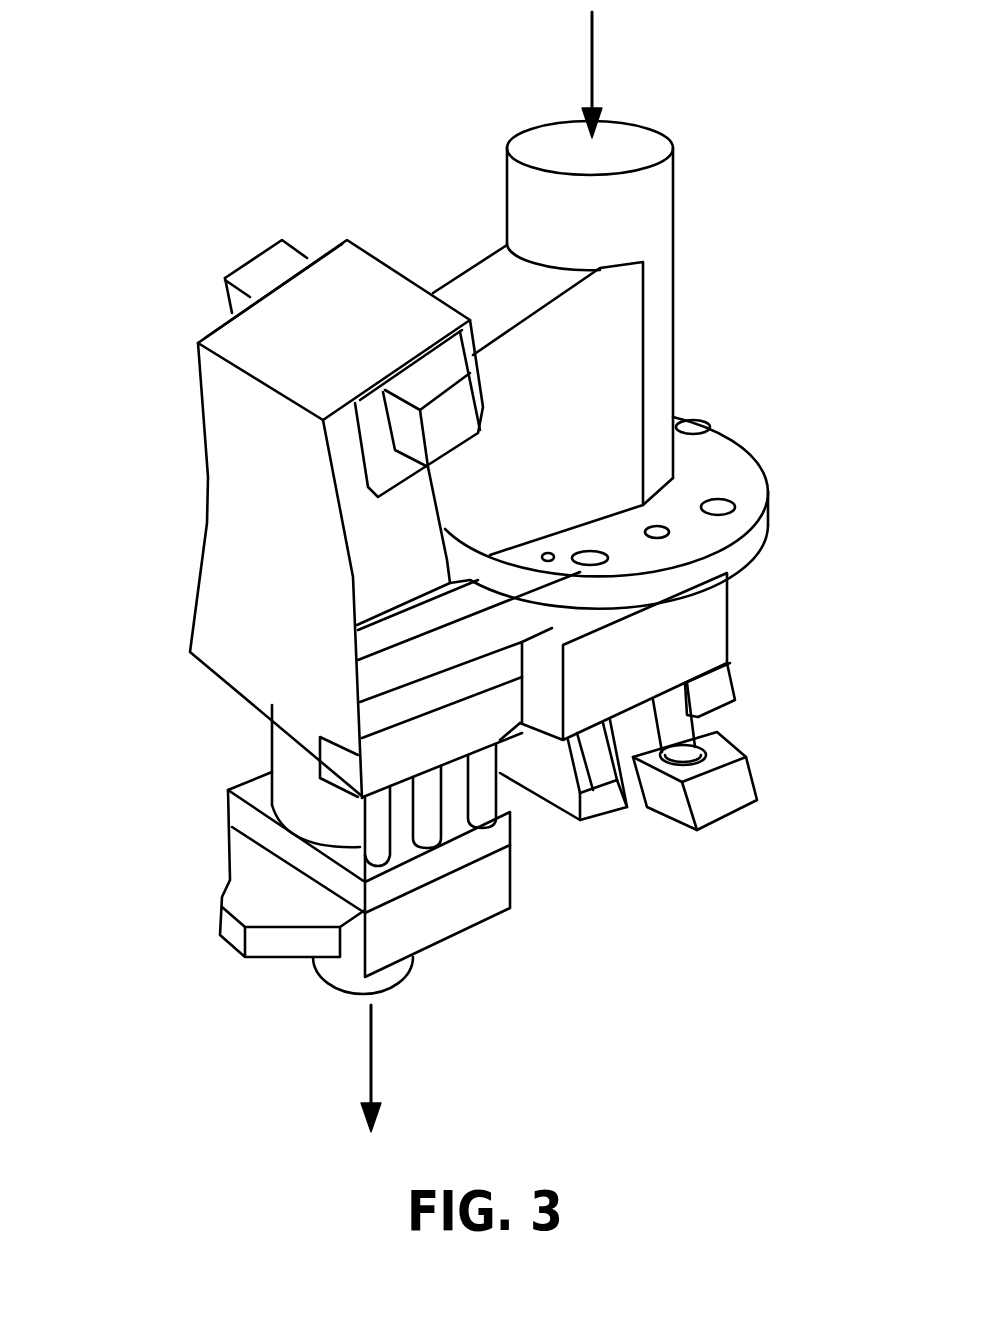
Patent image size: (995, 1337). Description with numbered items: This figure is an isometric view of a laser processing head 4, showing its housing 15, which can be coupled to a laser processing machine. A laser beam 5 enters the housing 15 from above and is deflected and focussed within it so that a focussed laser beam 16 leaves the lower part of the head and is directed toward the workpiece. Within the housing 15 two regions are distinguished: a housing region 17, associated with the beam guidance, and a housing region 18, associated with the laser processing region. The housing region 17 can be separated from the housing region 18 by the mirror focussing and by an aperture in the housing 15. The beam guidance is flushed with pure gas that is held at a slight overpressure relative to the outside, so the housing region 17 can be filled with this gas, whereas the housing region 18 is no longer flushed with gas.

The laser processing head 4 is at (160, 230).
The laser beam 5 is at (592, 38).
The housing 15 is at (273, 513).
The focussed laser beam 16 is at (371, 1032).
The housing region 17 is at (657, 305).
The housing region 18 is at (270, 897).